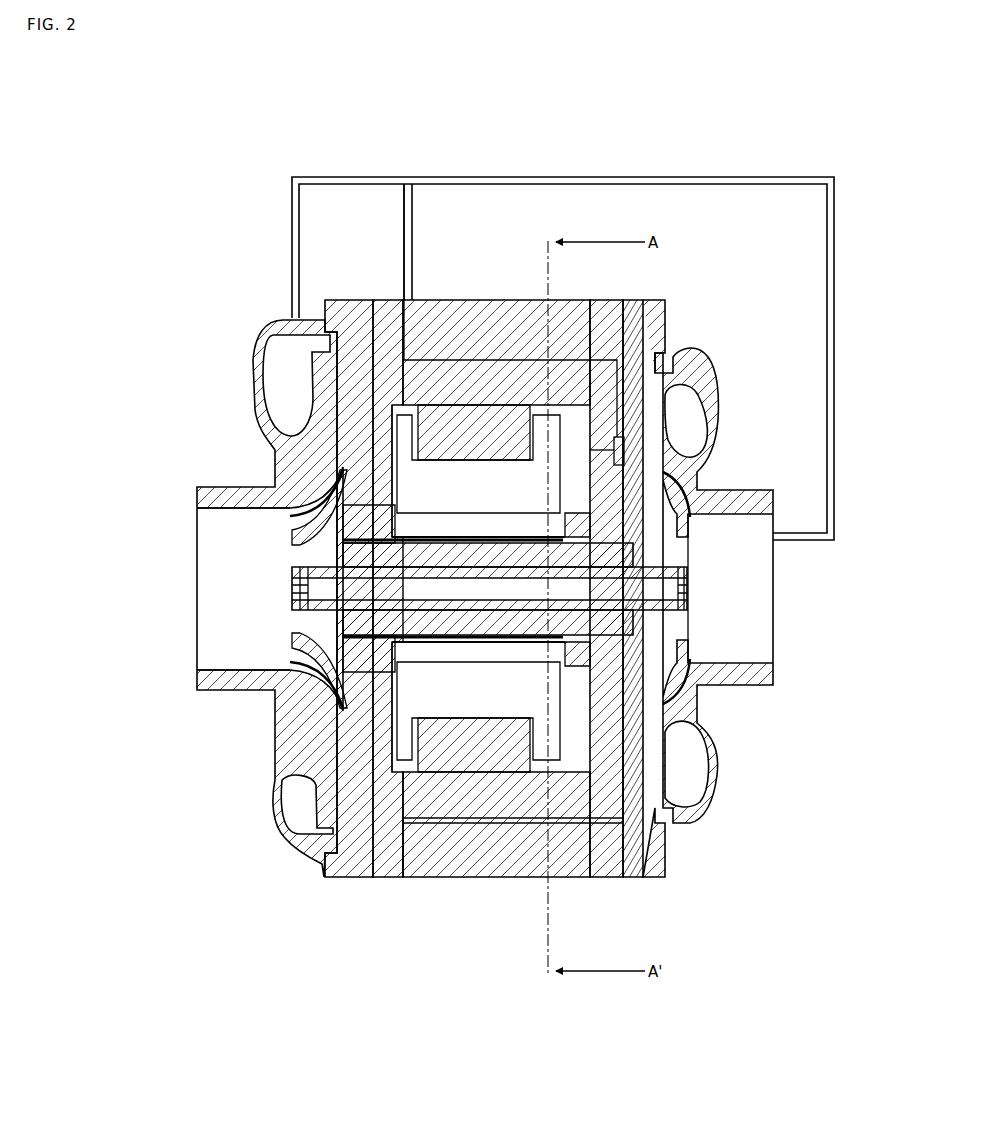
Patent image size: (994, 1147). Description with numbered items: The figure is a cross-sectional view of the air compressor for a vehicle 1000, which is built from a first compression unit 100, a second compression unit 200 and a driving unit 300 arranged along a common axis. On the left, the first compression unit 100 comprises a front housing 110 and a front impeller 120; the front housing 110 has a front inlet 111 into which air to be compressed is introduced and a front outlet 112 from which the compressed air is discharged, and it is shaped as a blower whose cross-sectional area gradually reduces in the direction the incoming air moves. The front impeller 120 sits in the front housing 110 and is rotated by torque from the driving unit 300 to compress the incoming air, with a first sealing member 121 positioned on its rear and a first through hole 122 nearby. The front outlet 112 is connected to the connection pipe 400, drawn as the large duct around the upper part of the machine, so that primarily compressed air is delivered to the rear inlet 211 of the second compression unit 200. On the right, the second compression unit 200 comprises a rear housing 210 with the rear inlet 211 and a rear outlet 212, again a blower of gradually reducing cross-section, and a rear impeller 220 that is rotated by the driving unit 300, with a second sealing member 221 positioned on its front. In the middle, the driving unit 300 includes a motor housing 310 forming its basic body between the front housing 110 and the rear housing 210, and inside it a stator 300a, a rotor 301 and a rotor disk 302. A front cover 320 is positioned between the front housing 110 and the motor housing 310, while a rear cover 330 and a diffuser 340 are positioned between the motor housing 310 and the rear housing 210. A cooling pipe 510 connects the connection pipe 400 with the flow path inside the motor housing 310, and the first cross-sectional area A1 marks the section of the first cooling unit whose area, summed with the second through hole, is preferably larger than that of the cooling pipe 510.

The air compressor for vehicle 1000 is at (795, 150).
The connection pipe 400 is at (556, 180).
The cooling pipe 510 is at (404, 215).
The first cross-sectional area A1 is at (404, 242).
The driving unit 300 is at (470, 292).
The stator 300a is at (489, 748).
The rotor 301 is at (420, 625).
The rotor disk 302 is at (565, 705).
The motor housing 310 is at (420, 885).
The front cover 320 is at (350, 885).
The rear cover 330 is at (607, 885).
The diffuser 340 is at (643, 885).
The first compression unit 100 is at (222, 432).
The front housing 110 is at (212, 598).
The front inlet 111 is at (225, 632).
The front outlet 112 is at (305, 377).
The front impeller 120 is at (278, 480).
The first sealing member 121 is at (334, 707).
The first through hole 122 is at (300, 522).
The second compression unit 200 is at (838, 722).
The rear housing 210 is at (762, 700).
The rear inlet 211 is at (750, 600).
The rear outlet 212 is at (700, 404).
The rear impeller 220 is at (698, 690).
The second sealing member 221 is at (708, 782).